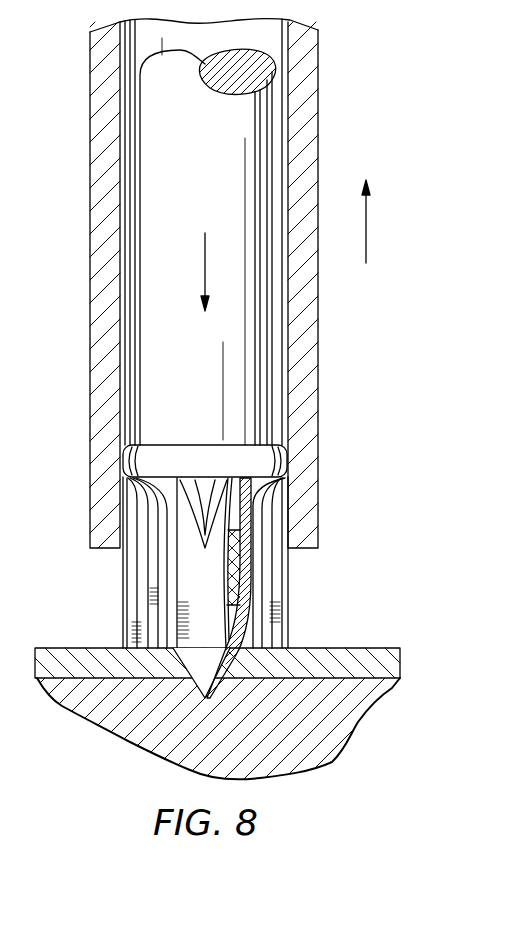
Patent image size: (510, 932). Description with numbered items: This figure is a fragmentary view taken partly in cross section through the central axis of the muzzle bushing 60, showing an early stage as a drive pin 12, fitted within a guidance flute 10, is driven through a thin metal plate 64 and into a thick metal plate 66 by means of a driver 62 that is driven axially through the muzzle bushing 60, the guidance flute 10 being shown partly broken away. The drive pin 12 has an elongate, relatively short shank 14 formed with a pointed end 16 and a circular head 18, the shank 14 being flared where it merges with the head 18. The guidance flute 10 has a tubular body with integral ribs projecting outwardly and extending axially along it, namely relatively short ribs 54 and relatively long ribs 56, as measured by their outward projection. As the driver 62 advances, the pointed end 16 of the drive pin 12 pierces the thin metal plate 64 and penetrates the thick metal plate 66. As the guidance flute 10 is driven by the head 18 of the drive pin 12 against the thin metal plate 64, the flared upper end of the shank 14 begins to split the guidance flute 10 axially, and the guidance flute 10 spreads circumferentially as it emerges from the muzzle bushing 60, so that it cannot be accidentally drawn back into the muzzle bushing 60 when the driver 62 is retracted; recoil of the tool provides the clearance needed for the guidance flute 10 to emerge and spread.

The guidance flute 10 is at (209, 562).
The drive pin 12 is at (247, 583).
The shank 14 is at (233, 530).
The pointed end 16 is at (197, 677).
The head 18 is at (189, 452).
The relatively short ribs 54 is at (253, 568).
The relatively long ribs 56 is at (177, 563).
The muzzle bushing 60 is at (308, 428).
The driver 62 is at (263, 325).
The thin metal plate 64 is at (108, 655).
The thick metal plate 66 is at (330, 710).